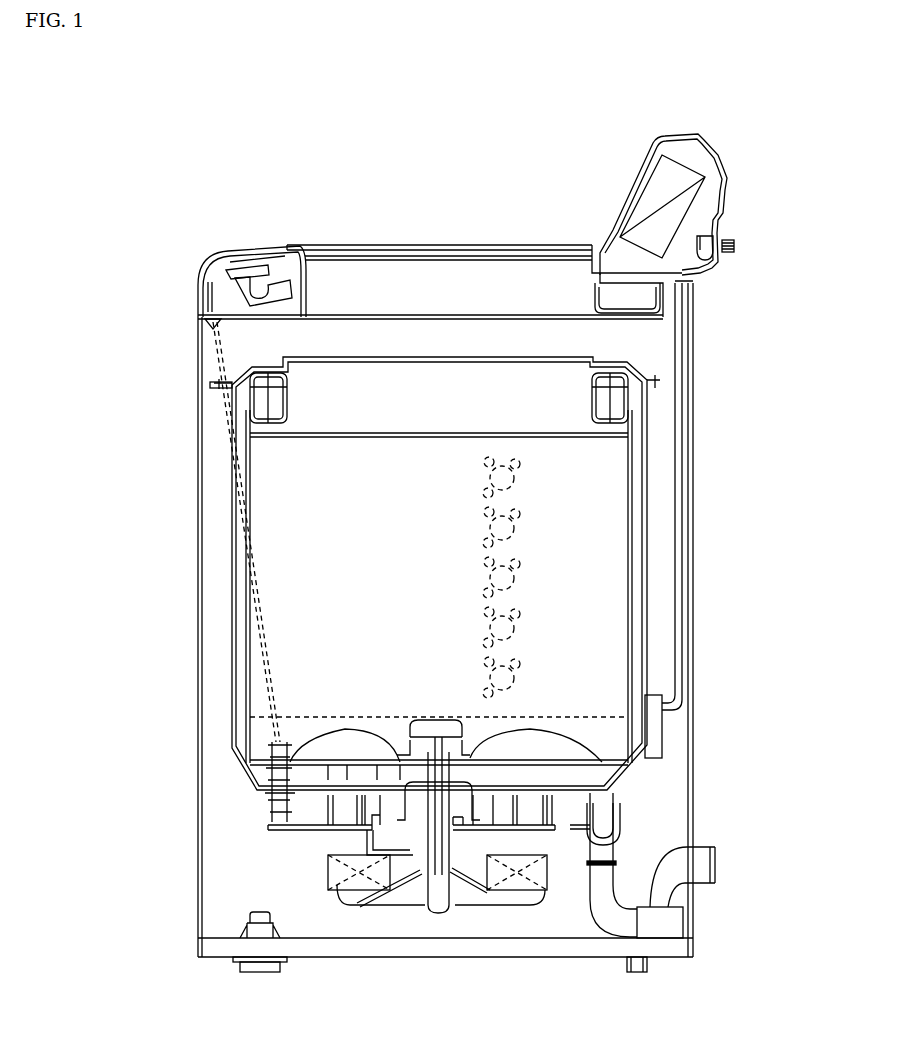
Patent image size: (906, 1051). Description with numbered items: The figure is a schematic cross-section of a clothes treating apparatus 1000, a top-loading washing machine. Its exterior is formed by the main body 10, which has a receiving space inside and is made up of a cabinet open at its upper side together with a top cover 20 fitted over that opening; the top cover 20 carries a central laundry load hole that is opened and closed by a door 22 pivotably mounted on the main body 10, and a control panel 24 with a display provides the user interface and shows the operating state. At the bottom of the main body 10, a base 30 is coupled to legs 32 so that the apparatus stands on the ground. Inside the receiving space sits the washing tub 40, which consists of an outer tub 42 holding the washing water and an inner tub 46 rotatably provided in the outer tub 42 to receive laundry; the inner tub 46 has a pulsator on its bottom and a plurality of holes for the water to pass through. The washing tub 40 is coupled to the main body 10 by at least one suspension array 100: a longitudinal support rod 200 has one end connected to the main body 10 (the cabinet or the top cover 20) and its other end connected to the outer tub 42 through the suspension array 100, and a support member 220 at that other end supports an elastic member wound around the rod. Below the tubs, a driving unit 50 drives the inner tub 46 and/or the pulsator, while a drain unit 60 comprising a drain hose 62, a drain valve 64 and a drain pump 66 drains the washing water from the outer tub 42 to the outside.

The clothes treating apparatus 1000 is at (285, 84).
The main body 10 is at (690, 505).
The top cover 20 is at (696, 292).
The door 22 is at (377, 245).
The control panel 24 is at (236, 250).
The base 30 is at (680, 947).
The legs 32 is at (637, 975).
The washing tub 40 is at (763, 548).
The outer tub 42 is at (643, 557).
The inner tub 46 is at (633, 604).
The driving unit 50 is at (417, 906).
The drain unit 60 is at (648, 861).
The drain hose 62 is at (608, 915).
The drain valve 64 is at (587, 827).
The drain pump 66 is at (667, 914).
The suspension array 100 is at (263, 708).
The support rod 200 is at (213, 338).
The support member 220 is at (268, 826).